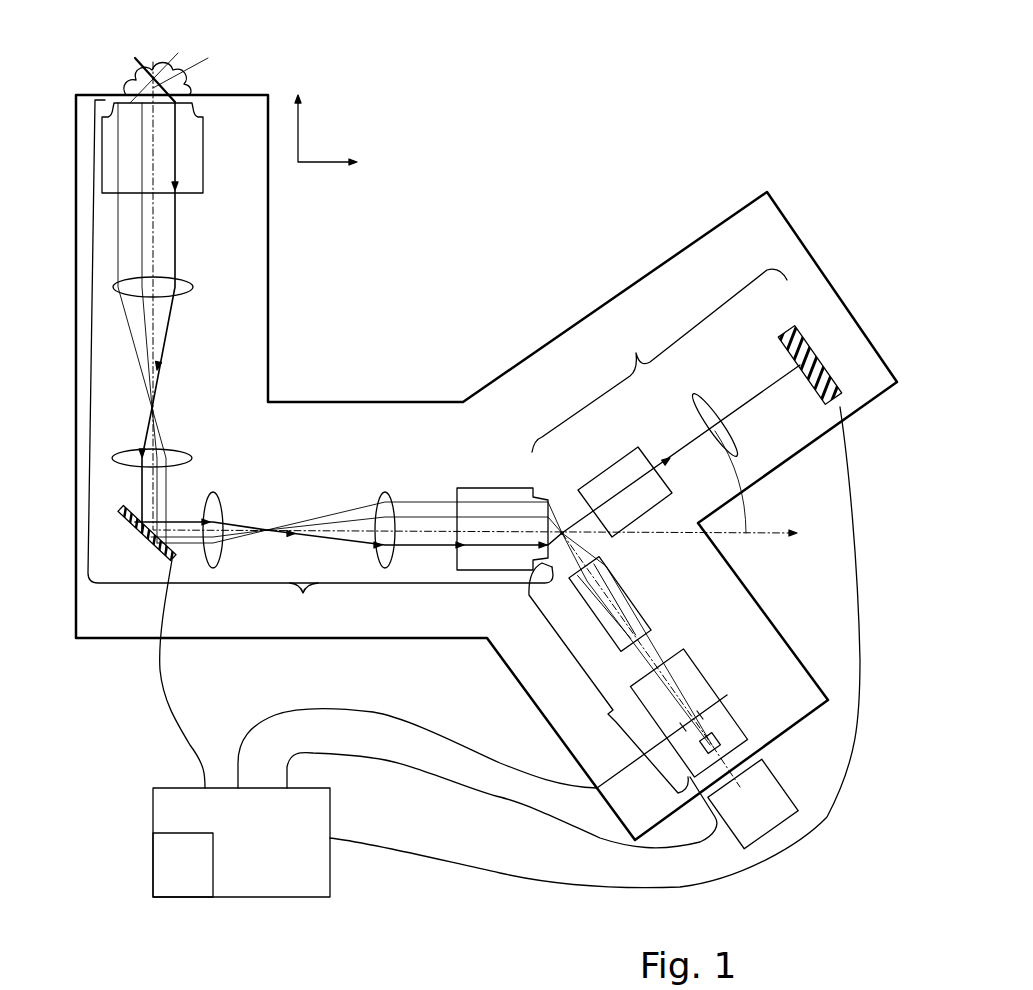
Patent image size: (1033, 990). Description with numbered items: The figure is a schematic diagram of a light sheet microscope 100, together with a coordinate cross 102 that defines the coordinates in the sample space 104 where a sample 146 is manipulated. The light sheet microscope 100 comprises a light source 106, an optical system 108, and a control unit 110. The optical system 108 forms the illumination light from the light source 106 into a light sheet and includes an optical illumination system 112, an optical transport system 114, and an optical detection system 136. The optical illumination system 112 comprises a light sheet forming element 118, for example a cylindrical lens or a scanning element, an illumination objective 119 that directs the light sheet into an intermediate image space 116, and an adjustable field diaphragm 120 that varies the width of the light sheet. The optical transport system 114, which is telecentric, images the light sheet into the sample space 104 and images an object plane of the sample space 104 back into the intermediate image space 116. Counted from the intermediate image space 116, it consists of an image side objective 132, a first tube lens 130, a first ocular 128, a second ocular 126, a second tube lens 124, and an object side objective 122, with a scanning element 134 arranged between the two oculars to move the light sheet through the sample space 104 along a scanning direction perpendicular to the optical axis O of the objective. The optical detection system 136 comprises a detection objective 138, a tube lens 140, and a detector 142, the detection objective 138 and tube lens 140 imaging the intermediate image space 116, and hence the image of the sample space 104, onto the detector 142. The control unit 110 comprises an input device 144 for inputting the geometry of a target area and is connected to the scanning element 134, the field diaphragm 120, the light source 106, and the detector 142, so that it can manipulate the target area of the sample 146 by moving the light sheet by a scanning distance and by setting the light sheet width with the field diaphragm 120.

The light sheet microscope 100 is at (624, 127).
The coordinate cross 102 is at (305, 132).
The sample space 104 is at (207, 48).
The light source 106 is at (785, 785).
The optical system 108 is at (380, 403).
The control unit 110 is at (241, 842).
The optical illumination system 112 is at (613, 713).
The optical transport system 114 is at (305, 605).
The intermediate image space 116 is at (562, 498).
The light sheet forming element 118 is at (717, 732).
The illumination objective 119 is at (643, 602).
The adjustable field diaphragm 120 is at (720, 692).
The object side objective 122 is at (205, 178).
The second tube lens 124 is at (193, 287).
The second ocular 126 is at (193, 457).
The first ocular 128 is at (226, 508).
The first tube lens 130 is at (385, 470).
The image side objective 132 is at (475, 480).
The scanning element 134 is at (150, 543).
The optical detection system 136 is at (659, 360).
The detection objective 138 is at (643, 520).
The tube lens 140 is at (740, 447).
The detector 142 is at (800, 330).
The input device 144 is at (190, 888).
The sample 146 is at (193, 93).
The optical axis O is at (153, 243).